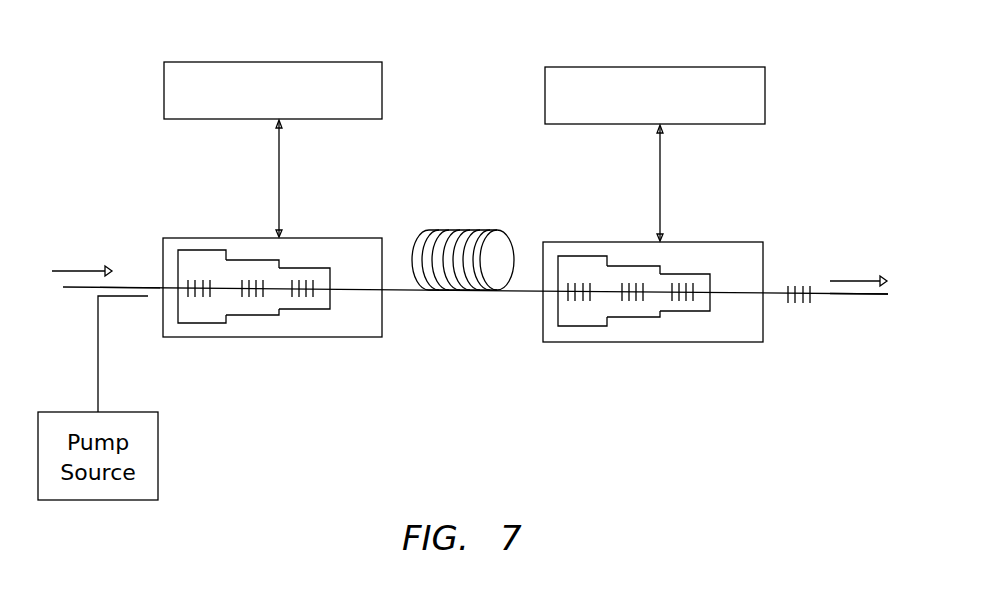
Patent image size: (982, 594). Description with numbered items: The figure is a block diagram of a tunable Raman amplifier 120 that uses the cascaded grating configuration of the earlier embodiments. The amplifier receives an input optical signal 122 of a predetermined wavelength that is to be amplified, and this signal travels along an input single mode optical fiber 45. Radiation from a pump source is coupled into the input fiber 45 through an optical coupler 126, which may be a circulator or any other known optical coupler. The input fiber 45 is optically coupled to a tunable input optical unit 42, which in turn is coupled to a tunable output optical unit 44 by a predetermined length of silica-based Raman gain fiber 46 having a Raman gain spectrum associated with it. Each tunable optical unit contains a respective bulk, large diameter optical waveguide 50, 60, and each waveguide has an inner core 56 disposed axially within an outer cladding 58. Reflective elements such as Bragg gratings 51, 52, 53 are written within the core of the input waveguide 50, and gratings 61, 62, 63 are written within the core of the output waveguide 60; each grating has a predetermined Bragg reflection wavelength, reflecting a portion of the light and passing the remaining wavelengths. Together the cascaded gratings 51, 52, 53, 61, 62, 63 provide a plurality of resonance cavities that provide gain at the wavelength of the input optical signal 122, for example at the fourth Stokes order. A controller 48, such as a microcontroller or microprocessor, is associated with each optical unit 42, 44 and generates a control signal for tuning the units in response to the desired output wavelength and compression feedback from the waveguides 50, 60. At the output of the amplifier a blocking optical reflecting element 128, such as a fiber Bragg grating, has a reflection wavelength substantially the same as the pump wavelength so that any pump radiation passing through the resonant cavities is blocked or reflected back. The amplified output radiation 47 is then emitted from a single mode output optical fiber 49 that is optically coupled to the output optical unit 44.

The tunable Raman amplifier 120 is at (494, 91).
The input optical signal 122 is at (73, 271).
The single mode optical fiber 45 is at (127, 286).
The optical coupler 126 is at (120, 298).
The controller 48 is at (270, 58).
The tunable input optical unit 42 is at (292, 233).
The tunable output optical unit 44 is at (673, 237).
The Raman gain fiber 46 is at (460, 226).
The large diameter optical waveguide 50 is at (276, 324).
The large diameter optical waveguide 60 is at (656, 328).
The reflective element 51 is at (193, 275).
The reflective element 52 is at (240, 275).
The reflective element 53 is at (312, 275).
The reflective element 61 is at (574, 279).
The reflective element 62 is at (622, 279).
The reflective element 63 is at (693, 279).
The inner core 56 is at (225, 290).
The outer cladding 58 is at (202, 316).
The blocking optical reflecting element 128 is at (800, 305).
The output radiation 47 is at (855, 255).
The single mode optical fiber 49 is at (860, 297).